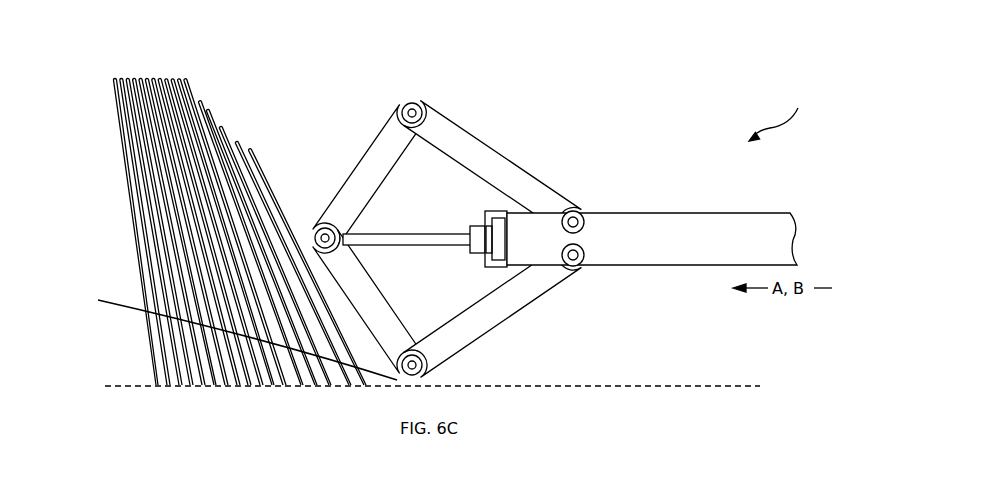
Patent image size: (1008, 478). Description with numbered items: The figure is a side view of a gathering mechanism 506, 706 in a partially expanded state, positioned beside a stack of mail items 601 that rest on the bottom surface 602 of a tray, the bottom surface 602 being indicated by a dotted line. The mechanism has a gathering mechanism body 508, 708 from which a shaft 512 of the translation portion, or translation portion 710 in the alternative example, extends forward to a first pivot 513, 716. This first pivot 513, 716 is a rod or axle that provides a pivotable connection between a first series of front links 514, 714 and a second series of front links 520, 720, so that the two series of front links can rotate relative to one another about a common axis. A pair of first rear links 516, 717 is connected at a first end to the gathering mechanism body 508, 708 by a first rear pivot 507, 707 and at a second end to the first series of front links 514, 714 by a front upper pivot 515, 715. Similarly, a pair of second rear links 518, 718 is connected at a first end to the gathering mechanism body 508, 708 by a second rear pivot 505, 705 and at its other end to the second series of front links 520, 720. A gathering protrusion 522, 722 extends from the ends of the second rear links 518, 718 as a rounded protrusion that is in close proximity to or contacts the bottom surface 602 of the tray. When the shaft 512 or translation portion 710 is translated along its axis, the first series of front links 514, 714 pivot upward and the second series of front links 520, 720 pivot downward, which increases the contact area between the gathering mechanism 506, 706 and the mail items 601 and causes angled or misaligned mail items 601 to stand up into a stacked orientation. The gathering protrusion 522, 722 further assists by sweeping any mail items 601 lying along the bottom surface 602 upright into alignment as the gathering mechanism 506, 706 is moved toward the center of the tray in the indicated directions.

The mail items 601 is at (318, 63).
The bottom surface 602 is at (692, 380).
The second rear pivot 505 is at (601, 278).
The second rear pivot 705 is at (578, 264).
The gathering mechanism 506 is at (787, 113).
The gathering mechanism 706 is at (787, 113).
The first rear pivot 507 is at (599, 201).
The first rear pivot 707 is at (577, 213).
The gathering mechanism body 508 is at (659, 210).
The gathering mechanism body 708 is at (776, 230).
The shaft 512 is at (425, 167).
The translation portion 710 is at (450, 233).
The first pivot 513 is at (312, 202).
The first pivot 716 is at (320, 226).
The first series of front links 514 is at (354, 175).
The first series of front links 714 is at (354, 190).
The front upper pivot 515 is at (391, 89).
The front upper pivot 715 is at (409, 101).
The first rear links 516 is at (493, 168).
The first rear links 717 is at (526, 181).
The second rear links 518 is at (493, 310).
The second rear links 718 is at (529, 288).
The second series of front links 520 is at (371, 302).
The second series of front links 720 is at (393, 331).
The gathering protrusion 522 is at (223, 327).
The gathering protrusion 722 is at (223, 327).